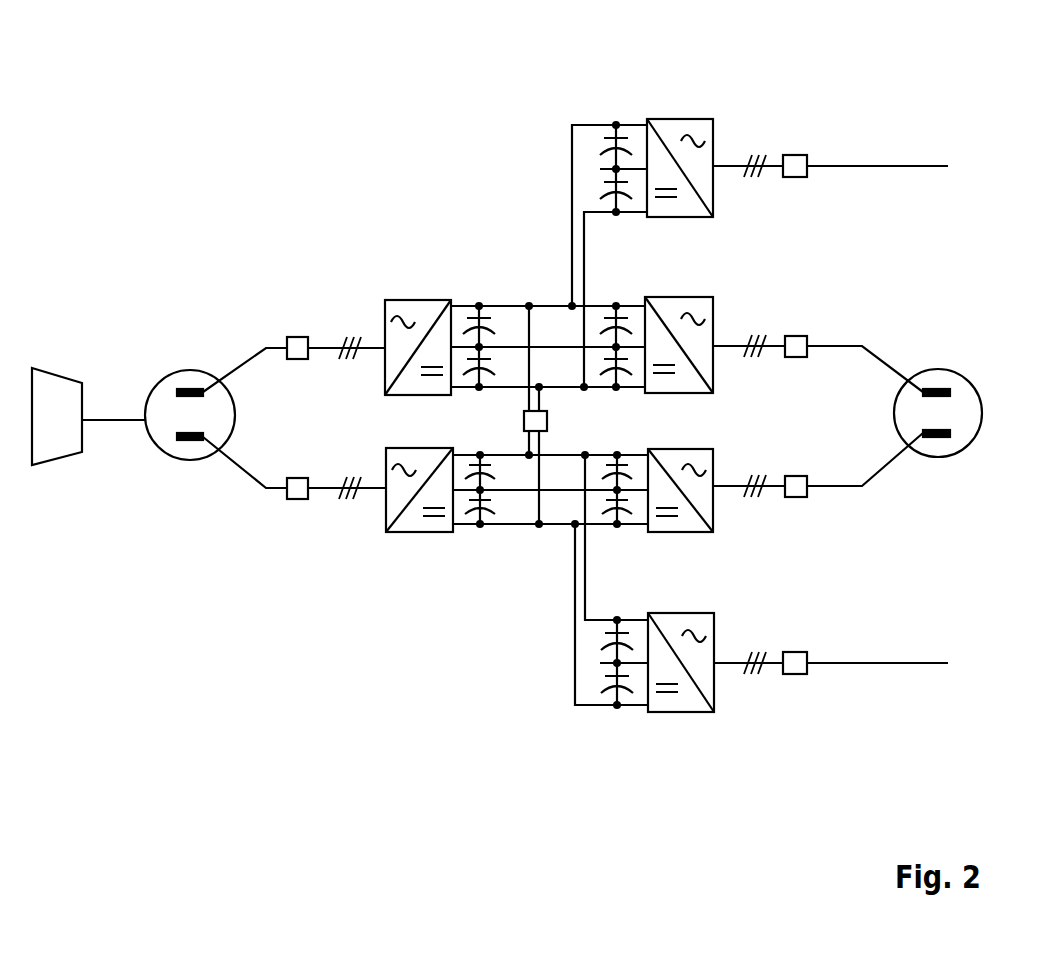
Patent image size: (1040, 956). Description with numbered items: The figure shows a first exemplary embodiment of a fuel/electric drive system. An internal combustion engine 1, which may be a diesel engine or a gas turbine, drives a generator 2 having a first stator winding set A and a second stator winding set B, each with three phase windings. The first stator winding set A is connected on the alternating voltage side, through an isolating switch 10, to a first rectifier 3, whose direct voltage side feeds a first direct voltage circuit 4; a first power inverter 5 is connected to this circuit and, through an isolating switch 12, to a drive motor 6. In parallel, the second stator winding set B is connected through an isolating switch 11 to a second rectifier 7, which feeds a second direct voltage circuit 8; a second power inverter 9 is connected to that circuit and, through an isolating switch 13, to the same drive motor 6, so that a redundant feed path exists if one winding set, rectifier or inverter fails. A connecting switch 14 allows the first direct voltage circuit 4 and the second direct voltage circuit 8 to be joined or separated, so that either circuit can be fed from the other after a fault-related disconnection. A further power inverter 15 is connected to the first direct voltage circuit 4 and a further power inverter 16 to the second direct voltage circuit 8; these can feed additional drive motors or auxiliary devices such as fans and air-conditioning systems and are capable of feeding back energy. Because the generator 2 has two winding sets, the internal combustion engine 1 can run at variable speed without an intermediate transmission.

The internal combustion engine 1 is at (50, 368).
The generator 2 is at (152, 385).
The first stator winding set A is at (183, 389).
The second stator winding set B is at (185, 440).
The first rectifier 3 is at (398, 300).
The first direct voltage circuit 4 is at (539, 260).
The first power inverter 5 is at (677, 297).
The drive motor 6 is at (957, 370).
The second rectifier 7 is at (425, 532).
The second direct voltage circuit 8 is at (552, 712).
The second power inverter 9 is at (678, 533).
The isolating switch 10 is at (297, 337).
The isolating switch 11 is at (300, 499).
The isolating switch 12 is at (800, 336).
The isolating switch 13 is at (803, 497).
The connecting switch 14 is at (524, 411).
The further power inverter 15 is at (680, 119).
The further power inverter 16 is at (692, 712).